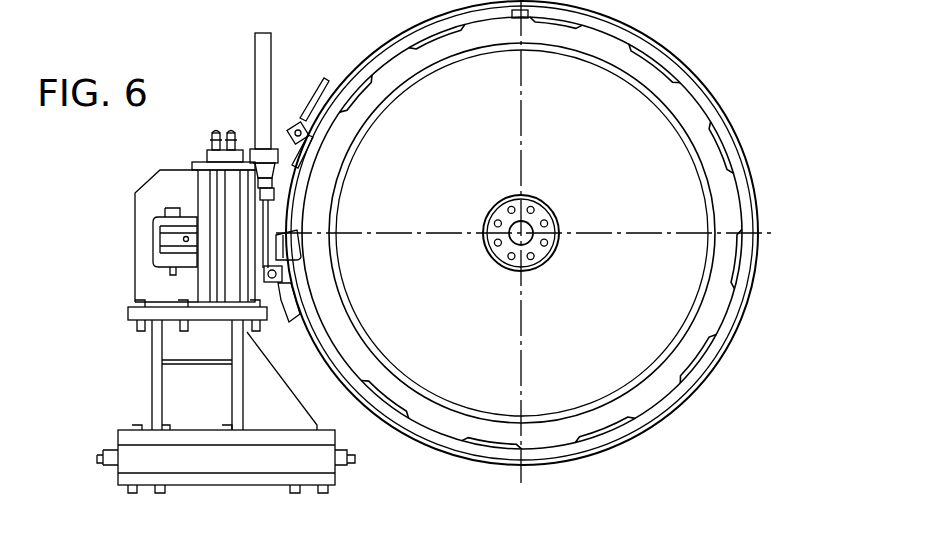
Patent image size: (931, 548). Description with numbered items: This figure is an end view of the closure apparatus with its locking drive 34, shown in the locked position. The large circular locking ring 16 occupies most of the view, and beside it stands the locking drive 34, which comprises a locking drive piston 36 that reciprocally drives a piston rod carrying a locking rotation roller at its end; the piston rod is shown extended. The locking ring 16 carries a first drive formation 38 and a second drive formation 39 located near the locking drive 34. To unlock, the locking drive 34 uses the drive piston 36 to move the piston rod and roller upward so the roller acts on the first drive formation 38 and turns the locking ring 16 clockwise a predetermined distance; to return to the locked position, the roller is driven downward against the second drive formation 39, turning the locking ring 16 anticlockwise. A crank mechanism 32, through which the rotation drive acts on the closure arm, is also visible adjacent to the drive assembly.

The locking ring 16 is at (710, 97).
The locking drive 34 is at (271, 44).
The locking drive piston 36 is at (268, 87).
The first drive formation 38 is at (280, 253).
The crank mechanism 32 is at (283, 270).
The second drive formation 39 is at (284, 292).